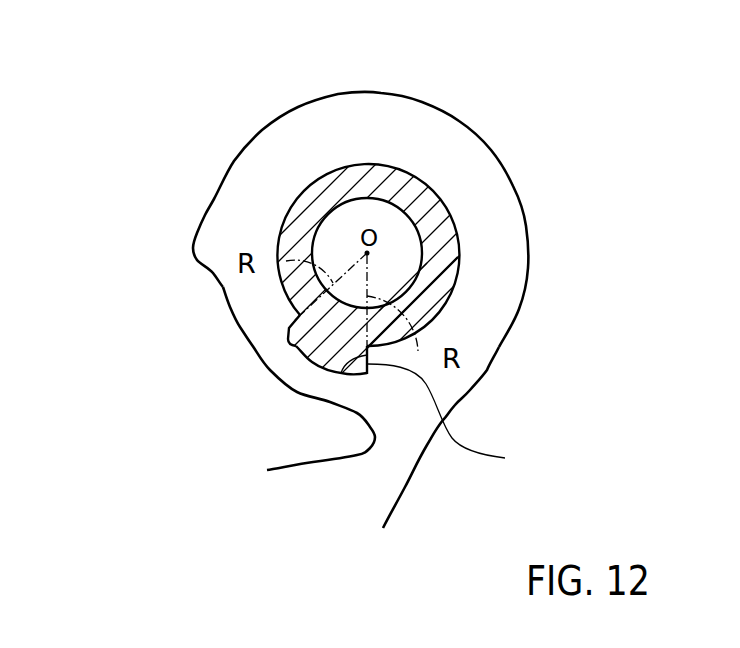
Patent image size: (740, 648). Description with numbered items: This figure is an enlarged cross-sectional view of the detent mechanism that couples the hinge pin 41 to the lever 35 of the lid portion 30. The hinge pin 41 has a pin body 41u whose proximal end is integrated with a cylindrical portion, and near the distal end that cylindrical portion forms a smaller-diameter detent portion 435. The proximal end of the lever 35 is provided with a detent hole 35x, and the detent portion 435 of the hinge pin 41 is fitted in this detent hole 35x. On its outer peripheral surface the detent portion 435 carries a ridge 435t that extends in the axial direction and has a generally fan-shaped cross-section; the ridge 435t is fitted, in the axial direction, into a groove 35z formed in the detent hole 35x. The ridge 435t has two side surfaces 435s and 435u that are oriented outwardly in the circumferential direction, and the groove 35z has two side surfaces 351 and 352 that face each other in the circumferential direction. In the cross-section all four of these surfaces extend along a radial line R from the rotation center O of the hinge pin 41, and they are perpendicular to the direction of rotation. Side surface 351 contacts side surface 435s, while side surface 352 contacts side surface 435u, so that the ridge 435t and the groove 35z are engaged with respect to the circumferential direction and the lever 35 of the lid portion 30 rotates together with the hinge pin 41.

The lid portion 30 is at (543, 209).
The lever 35 is at (529, 324).
The hinge pin 41 is at (348, 148).
The pin body 41u is at (337, 227).
The detent hole 35x is at (416, 186).
The detent portion 435 is at (438, 237).
The side surface of ridge 435s is at (288, 335).
The ridge 435t is at (330, 353).
The side surface of ridge 435u is at (467, 411).
The side surface of groove 351 is at (328, 349).
The side surface of groove 352 is at (347, 312).
The groove 35z is at (362, 318).